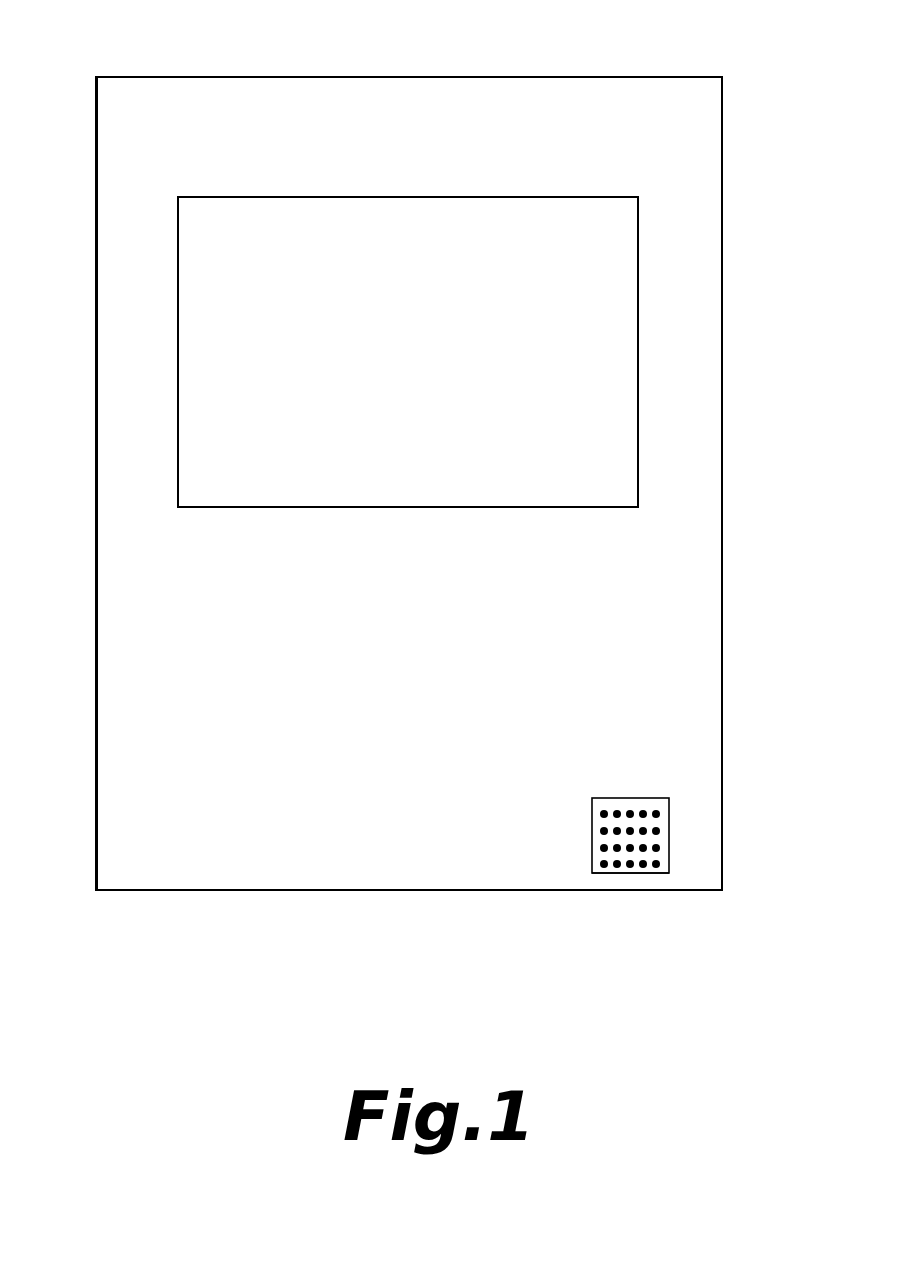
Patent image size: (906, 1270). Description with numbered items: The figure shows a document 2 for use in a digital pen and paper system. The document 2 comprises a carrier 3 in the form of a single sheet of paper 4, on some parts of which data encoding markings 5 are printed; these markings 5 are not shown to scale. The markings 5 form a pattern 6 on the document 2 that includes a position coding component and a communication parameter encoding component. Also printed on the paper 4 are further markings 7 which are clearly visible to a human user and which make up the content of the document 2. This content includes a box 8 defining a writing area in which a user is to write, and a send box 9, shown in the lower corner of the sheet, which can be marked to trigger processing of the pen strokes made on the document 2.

The document 2 is at (168, 77).
The carrier 3 is at (113, 152).
The sheet of paper 4 is at (113, 308).
The data encoding markings 5 is at (656, 831).
The pattern 6 is at (632, 874).
The further markings 7 is at (652, 316).
The box 8 is at (638, 453).
The send box 9 is at (592, 837).